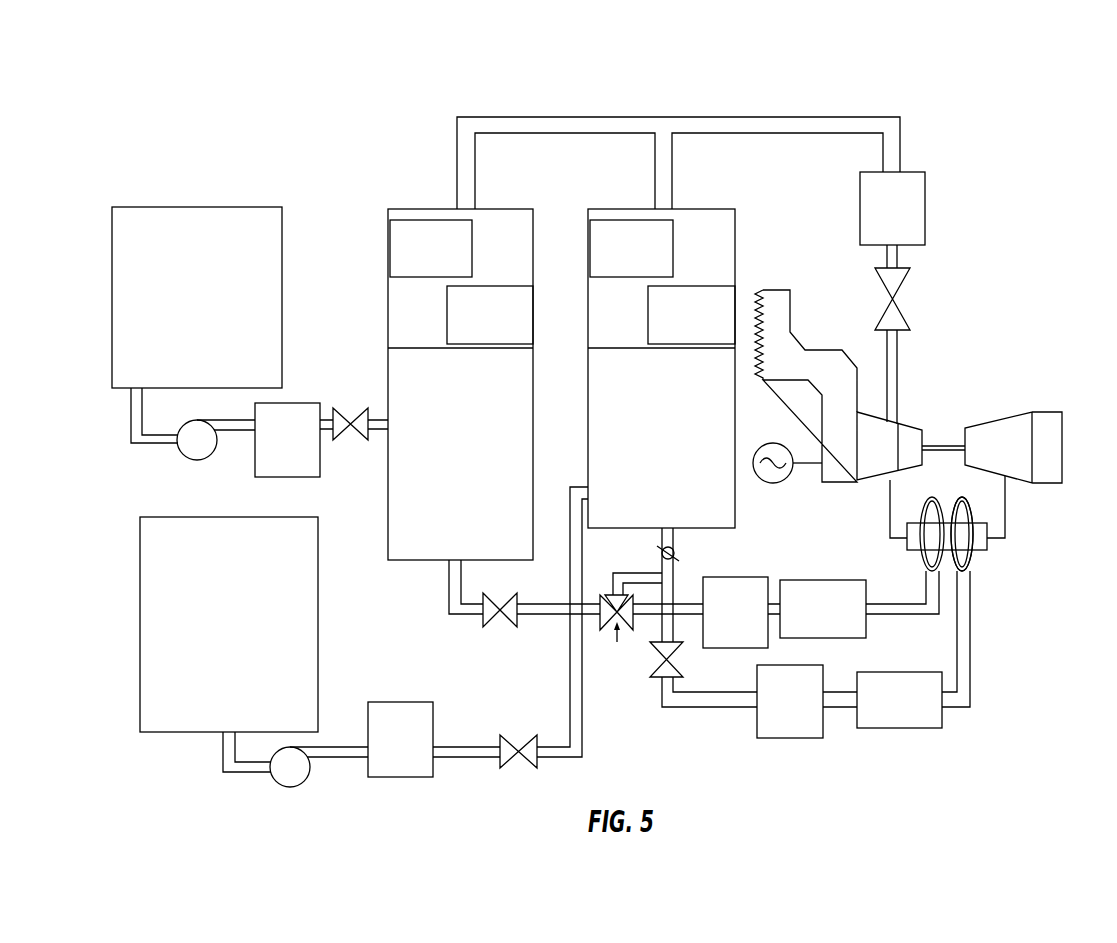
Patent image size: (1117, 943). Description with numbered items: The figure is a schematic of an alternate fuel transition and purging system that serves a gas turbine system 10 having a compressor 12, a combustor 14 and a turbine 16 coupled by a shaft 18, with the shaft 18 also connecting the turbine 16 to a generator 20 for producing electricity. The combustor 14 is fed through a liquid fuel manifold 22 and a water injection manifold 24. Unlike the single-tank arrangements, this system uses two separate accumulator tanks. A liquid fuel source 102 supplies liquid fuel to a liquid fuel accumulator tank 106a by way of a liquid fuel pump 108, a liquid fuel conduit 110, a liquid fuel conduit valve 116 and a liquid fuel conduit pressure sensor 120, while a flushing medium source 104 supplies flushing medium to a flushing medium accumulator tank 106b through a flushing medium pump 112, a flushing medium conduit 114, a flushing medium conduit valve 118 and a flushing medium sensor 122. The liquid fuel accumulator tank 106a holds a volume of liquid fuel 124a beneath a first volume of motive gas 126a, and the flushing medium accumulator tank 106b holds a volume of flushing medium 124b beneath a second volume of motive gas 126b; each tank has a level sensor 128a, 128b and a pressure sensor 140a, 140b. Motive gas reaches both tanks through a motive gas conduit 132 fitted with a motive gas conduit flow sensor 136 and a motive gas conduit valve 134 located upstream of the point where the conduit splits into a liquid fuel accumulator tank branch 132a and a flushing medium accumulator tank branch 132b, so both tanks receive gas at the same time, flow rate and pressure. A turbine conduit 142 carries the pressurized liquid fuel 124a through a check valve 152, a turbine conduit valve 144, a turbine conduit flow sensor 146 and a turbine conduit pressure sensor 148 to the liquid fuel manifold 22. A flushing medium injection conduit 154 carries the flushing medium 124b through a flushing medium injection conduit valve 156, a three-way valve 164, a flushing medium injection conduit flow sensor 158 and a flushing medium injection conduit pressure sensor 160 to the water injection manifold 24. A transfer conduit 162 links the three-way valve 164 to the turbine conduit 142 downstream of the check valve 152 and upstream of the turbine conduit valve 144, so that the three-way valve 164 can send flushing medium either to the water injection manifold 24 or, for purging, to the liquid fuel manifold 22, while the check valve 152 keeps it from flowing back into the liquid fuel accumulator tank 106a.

The gas turbine system 10 is at (1055, 550).
The compressor 12 is at (880, 477).
The combustor 14 is at (975, 548).
The turbine 16 is at (1047, 412).
The shaft 18 is at (935, 443).
The generator 20 is at (782, 482).
The liquid fuel manifold 22 is at (973, 553).
The water injection manifold 24 is at (926, 570).
The liquid fuel source 102 is at (140, 573).
The flushing medium source 104 is at (112, 258).
The liquid fuel accumulator tank 106a is at (584, 187).
The flushing medium accumulator tank 106b is at (395, 170).
The liquid fuel pump 108 is at (290, 787).
The liquid fuel conduit 110 is at (223, 743).
The flushing medium pump 112 is at (211, 454).
The flushing medium conduit 114 is at (131, 420).
The liquid fuel conduit valve 116 is at (510, 740).
The flushing medium conduit valve 118 is at (365, 437).
The liquid fuel conduit pressure sensor 120 is at (400, 703).
The flushing medium sensor 122 is at (303, 403).
The volume of liquid fuel 124a is at (588, 418).
The volume of flushing medium 124b is at (388, 515).
The first volume of motive gas 126a is at (725, 245).
The second volume of motive gas 126b is at (403, 323).
The liquid fuel accumulator tank level sensor 128a is at (728, 308).
The flushing medium accumulator tank level sensor 128b is at (525, 335).
The motive gas conduit 132 is at (775, 118).
The liquid fuel accumulator tank branch 132a is at (668, 190).
The flushing medium accumulator tank branch 132b is at (457, 147).
The motive gas conduit valve 134 is at (897, 288).
The motive gas conduit flow sensor 136 is at (925, 205).
The liquid fuel accumulator tank pressure sensor 140a is at (590, 258).
The flushing medium accumulator tank pressure sensor 140b is at (390, 252).
The turbine conduit 142 is at (717, 708).
The turbine conduit valve 144 is at (657, 677).
The turbine conduit flow sensor 146 is at (787, 738).
The turbine conduit pressure sensor 148 is at (903, 728).
The check valve 152 is at (677, 552).
The flushing medium injection conduit 154 is at (448, 595).
The flushing medium injection conduit valve 156 is at (513, 630).
The flushing medium injection conduit flow sensor 158 is at (738, 577).
The flushing medium injection conduit pressure sensor 160 is at (847, 580).
The transfer conduit 162 is at (640, 573).
The three-way valve 164 is at (617, 623).